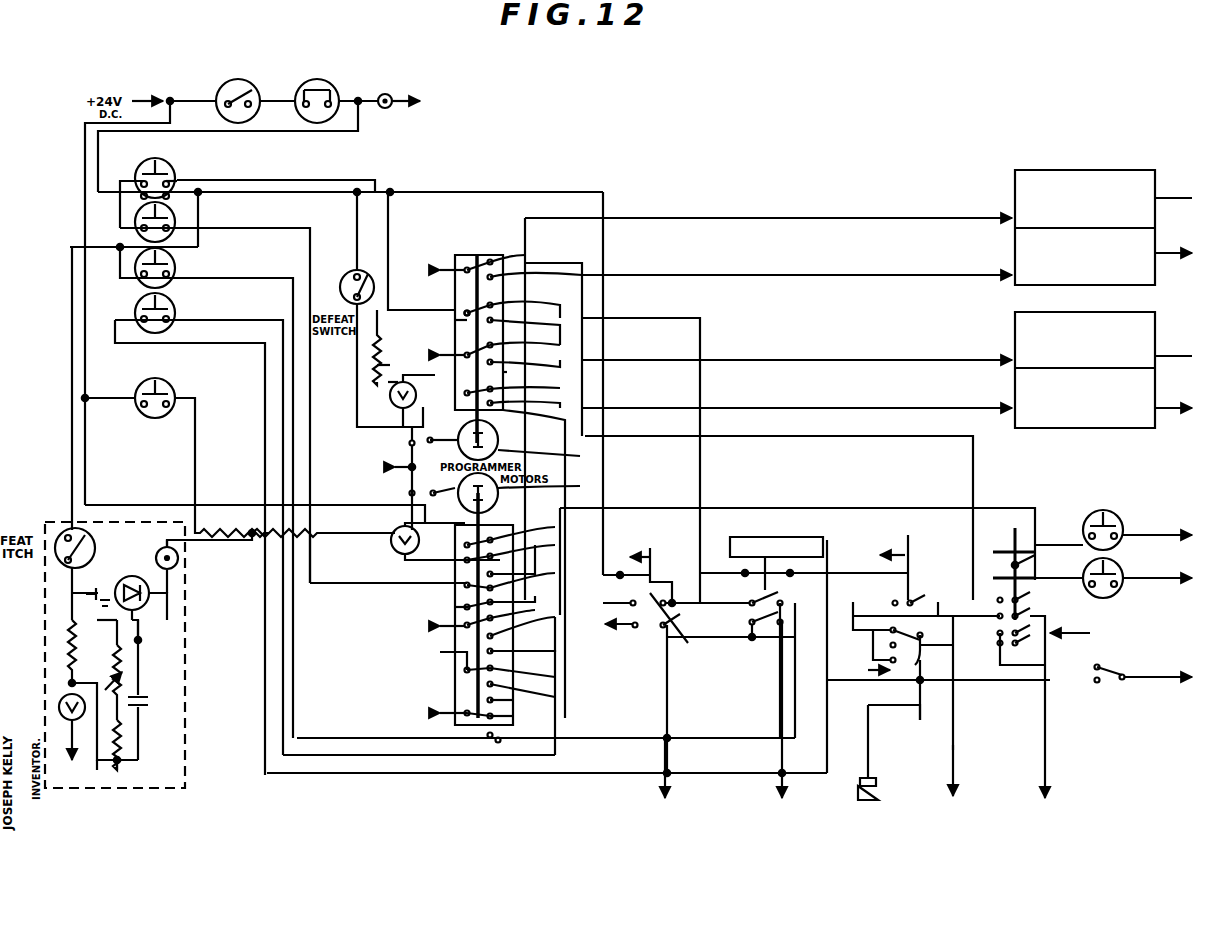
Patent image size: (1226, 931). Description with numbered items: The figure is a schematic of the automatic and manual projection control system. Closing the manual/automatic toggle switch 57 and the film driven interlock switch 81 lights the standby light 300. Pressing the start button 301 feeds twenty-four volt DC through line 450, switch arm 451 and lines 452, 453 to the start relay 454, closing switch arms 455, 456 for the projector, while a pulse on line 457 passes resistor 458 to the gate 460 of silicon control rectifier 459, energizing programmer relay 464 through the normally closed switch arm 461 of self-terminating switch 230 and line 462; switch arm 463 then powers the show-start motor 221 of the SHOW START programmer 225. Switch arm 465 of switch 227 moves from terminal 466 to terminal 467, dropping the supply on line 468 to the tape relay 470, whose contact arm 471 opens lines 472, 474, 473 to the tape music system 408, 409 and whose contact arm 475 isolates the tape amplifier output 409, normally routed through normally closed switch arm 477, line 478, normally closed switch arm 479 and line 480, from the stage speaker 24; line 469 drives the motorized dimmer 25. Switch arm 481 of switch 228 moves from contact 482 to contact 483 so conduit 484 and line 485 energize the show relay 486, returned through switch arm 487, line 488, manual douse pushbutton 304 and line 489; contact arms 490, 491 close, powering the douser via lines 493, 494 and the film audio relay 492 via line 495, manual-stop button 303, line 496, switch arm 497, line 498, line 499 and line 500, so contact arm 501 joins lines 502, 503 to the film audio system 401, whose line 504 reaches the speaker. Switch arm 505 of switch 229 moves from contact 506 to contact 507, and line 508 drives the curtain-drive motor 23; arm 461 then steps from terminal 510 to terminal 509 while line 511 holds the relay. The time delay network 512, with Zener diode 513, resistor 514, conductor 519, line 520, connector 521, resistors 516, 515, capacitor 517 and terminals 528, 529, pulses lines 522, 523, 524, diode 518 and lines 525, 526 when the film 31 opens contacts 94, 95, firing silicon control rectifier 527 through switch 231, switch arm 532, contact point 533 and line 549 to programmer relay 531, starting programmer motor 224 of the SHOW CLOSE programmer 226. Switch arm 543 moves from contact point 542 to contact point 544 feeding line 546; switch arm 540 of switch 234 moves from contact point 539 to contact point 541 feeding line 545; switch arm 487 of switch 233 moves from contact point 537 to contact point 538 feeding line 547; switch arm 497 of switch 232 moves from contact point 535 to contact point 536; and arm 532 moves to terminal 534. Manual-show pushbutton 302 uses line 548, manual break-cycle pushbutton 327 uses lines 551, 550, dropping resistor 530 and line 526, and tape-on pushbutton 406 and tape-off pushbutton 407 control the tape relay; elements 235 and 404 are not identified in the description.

The manual/automatic toggle switch 57 is at (258, 68).
The film driven interlock switch 81 is at (302, 80).
The standby light 300 is at (392, 108).
The start button 301 is at (165, 172).
The manual-stop button 303 is at (130, 236).
The manual-show pushbutton 302 is at (132, 262).
The manual douse pushbutton 304 is at (135, 318).
The manual break-cycle pushbutton 327 is at (155, 420).
The motorized dimmer 25 is at (1158, 164).
The curtain-drive motor 23 is at (1155, 316).
The SHOW START programmer 225 is at (473, 245).
The SHOW CLOSE programmer 226 is at (450, 724).
The show-start motor 221 is at (580, 456).
The programmer motor 224 is at (580, 486).
The time delay network 512 is at (190, 707).
The film 31 is at (72, 592).
The stage speaker 24 is at (878, 784).
The film audio system 401 is at (958, 800).
The monitor contact 404 is at (1110, 692).
The manual tape-on pushbutton 406 is at (1090, 514).
The tape-off pushbutton 407 is at (1103, 600).
The tape amplifier output 409 is at (1112, 633).
The tape music system 408 is at (1050, 799).
The line 450 is at (263, 138).
The switch arm 451 is at (140, 184).
The line 452 is at (316, 213).
The line 453 is at (505, 183).
The start relay 454 is at (652, 558).
The switch arm 455 is at (708, 642).
The switch arm 456 is at (655, 630).
The line 457 is at (355, 176).
The resistor 458 is at (375, 367).
The silicon control rectifier 459 is at (392, 390).
The gate 460 is at (392, 400).
The normally closed switch arm 461 is at (520, 404).
The line 462 is at (365, 352).
The switch arm 463 is at (412, 469).
The programmer relay 464 is at (423, 420).
The switch arm 465 is at (495, 262).
The terminal 466 is at (525, 252).
The terminal 467 is at (520, 291).
The line 468 is at (912, 429).
The line 469 is at (776, 280).
The tape relay 470 is at (1035, 547).
The contact arm 471 is at (1035, 602).
The line 472 is at (795, 660).
The line 473 is at (1047, 762).
The line 474 is at (938, 608).
The contact arm 475 is at (1040, 647).
The normally closed switch arm 477 is at (920, 647).
The line 478 is at (873, 642).
The normally closed switch arm 479 is at (910, 670).
The line 480 is at (870, 760).
The switch arm 481 is at (460, 320).
The contact 482 is at (520, 307).
The contact 483 is at (520, 327).
The conduit 484 is at (388, 237).
The line 485 is at (705, 337).
The show relay 486 is at (766, 571).
The switch arm 487 is at (465, 634).
The line 488 is at (555, 774).
The line 489 is at (370, 782).
The contact arm 490 is at (780, 603).
The contact arm 491 is at (745, 618).
The film audio relay 492 is at (908, 558).
The line 493 is at (748, 670).
The line 494 is at (780, 710).
The line 495 is at (120, 212).
The line 496 is at (308, 258).
The switch arm 497 is at (535, 596).
The line 498 is at (673, 615).
The line 499 is at (731, 603).
The line 500 is at (880, 584).
The contact arm 501 is at (926, 610).
The line 502 is at (900, 601).
The line 503 is at (955, 746).
The line 504 is at (910, 707).
The switch arm 505 is at (520, 371).
The contact 506 is at (520, 346).
The contact 507 is at (515, 374).
The line 508 is at (860, 354).
The terminal 509 is at (520, 421).
The terminal 510 is at (520, 388).
The line 511 is at (454, 427).
The switch 227 is at (460, 277).
The switch 228 is at (455, 320).
The switch 229 is at (462, 364).
The self-terminating switch 230 is at (406, 369).
The switch 231 is at (455, 568).
The switch 232 is at (465, 590).
The switch 233 is at (455, 607).
The switch 234 is at (467, 670).
The contact 235 is at (467, 712).
The Zener diode 513 is at (68, 662).
The resistor 514 is at (68, 642).
The variable resistor 515 is at (117, 687).
The resistor 516 is at (122, 765).
The capacitor 517 is at (122, 737).
The diode 518 is at (180, 562).
The conductor 519 is at (62, 702).
The line 520 is at (72, 419).
The connector 521 is at (100, 777).
The line 522 is at (152, 630).
The line 523 is at (160, 612).
The line 524 is at (165, 597).
The line 525 is at (250, 548).
The line 526 is at (355, 542).
The silicon control rectifier 527 is at (392, 552).
The terminal 528 is at (150, 704).
The terminal 529 is at (120, 774).
The dropping resistor 530 is at (243, 530).
The programmer relay 531 is at (420, 517).
The switch arm 532 is at (555, 545).
The contact point 533 is at (555, 527).
The terminal 534 is at (535, 560).
The contact point 535 is at (555, 573).
The contact point 536 is at (535, 610).
The contact point 537 is at (555, 617).
The contact point 538 is at (555, 650).
The contact point 539 is at (555, 677).
The switch arm 540 is at (555, 697).
The contact point 541 is at (525, 692).
The contact point 542 is at (524, 708).
The switch arm 543 is at (490, 735).
The contact point 544 is at (498, 740).
The line 545 is at (862, 214).
The line 546 is at (855, 404).
The line 547 is at (860, 502).
The line 548 is at (650, 732).
The line 549 is at (252, 494).
The line 550 is at (198, 450).
The line 551 is at (112, 388).
The stationary contact 94 is at (138, 642).
The contact 95 is at (107, 628).